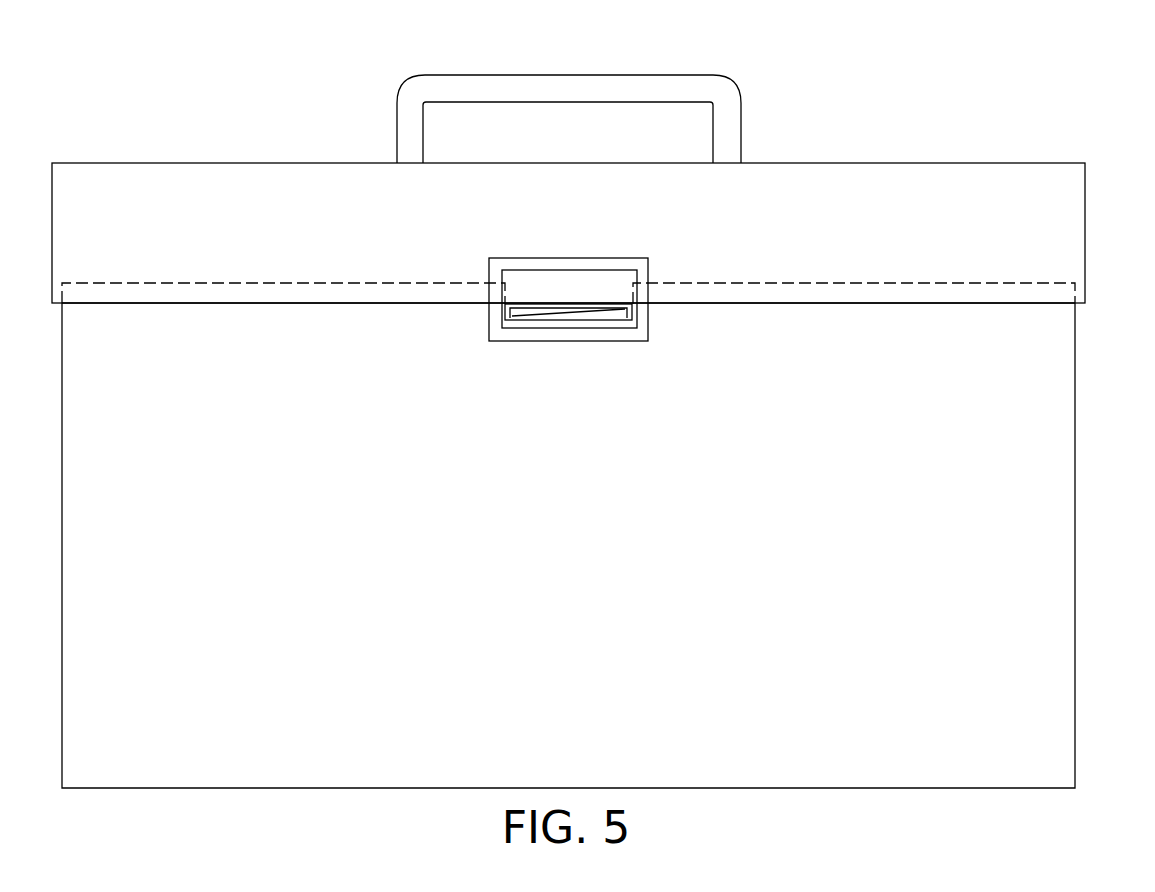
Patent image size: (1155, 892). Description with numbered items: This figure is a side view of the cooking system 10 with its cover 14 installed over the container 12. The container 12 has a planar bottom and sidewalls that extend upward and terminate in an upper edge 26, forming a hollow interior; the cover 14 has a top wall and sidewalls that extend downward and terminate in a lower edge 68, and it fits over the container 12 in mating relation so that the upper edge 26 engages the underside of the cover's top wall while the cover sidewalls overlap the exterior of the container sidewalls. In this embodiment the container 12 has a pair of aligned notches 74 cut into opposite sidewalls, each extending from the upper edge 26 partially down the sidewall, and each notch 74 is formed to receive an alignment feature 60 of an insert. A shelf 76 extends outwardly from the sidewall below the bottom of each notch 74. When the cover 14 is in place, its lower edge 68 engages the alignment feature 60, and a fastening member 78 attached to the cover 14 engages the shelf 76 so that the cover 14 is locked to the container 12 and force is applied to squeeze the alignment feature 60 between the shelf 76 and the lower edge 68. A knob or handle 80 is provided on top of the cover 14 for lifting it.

The cooking system 10 is at (1011, 127).
The container 12 is at (1058, 612).
The cover 14 is at (1070, 223).
The upper edge 26 is at (284, 282).
The alignment feature 60 is at (538, 311).
The lower edge 68 is at (768, 304).
The notch 74 is at (630, 292).
The shelf 76 is at (583, 327).
The fastening member 78 is at (489, 323).
The handle 80 is at (460, 73).